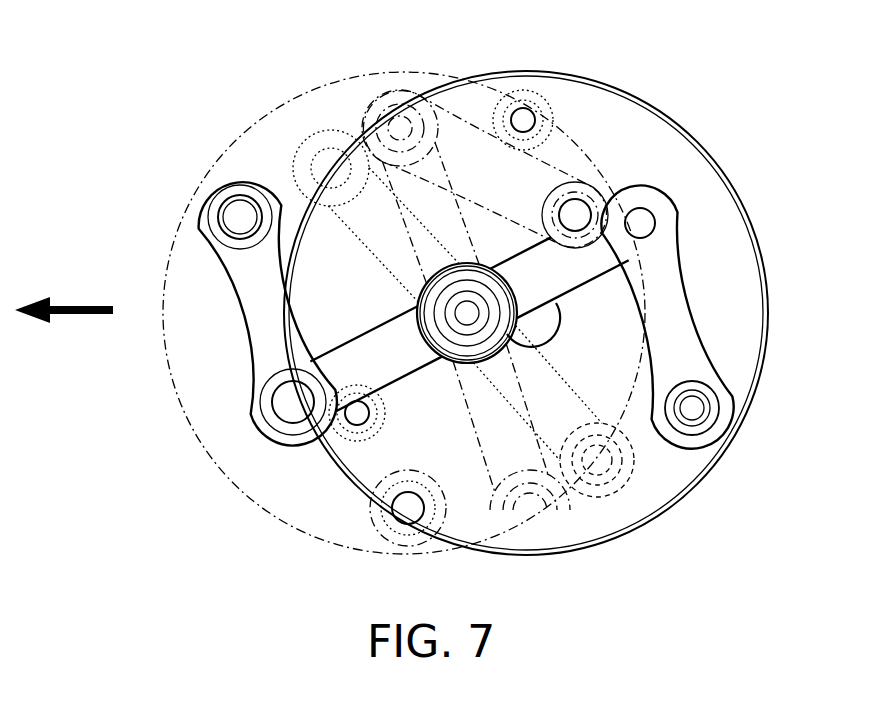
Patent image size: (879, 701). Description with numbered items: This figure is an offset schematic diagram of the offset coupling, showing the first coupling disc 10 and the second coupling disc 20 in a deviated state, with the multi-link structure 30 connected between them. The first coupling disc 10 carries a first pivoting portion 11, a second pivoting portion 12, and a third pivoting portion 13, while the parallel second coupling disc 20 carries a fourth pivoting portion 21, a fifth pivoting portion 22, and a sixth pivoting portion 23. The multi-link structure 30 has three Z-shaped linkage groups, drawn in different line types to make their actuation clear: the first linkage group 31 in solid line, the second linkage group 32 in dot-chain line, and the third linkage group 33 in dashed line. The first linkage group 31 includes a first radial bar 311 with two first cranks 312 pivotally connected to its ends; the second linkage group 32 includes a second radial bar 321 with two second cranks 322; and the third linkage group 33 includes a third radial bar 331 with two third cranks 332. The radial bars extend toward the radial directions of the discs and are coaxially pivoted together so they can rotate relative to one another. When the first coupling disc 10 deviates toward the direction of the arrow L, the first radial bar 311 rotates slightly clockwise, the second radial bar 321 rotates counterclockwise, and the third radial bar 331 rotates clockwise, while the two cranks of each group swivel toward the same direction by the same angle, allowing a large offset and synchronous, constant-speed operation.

The first coupling disc 10 is at (165, 335).
The second coupling disc 20 is at (743, 332).
The multi-link structure 30 is at (357, 13).
The first linkage group 31 is at (240, 176).
The first radial bar 311 is at (262, 362).
The first cranks 312 is at (243, 270).
The second linkage group 32 is at (370, 103).
The second radial bar 321 is at (402, 132).
The second cranks 322 is at (460, 150).
The third linkage group 33 is at (310, 133).
The third radial bar 331 is at (597, 463).
The third cranks 332 is at (552, 128).
The first pivoting portion 11 is at (240, 218).
The second pivoting portion 12 is at (585, 205).
The third pivoting portion 13 is at (408, 510).
The fourth pivoting portion 21 is at (695, 413).
The fifth pivoting portion 22 is at (358, 420).
The sixth pivoting portion 23 is at (523, 118).
The arrow L is at (70, 303).